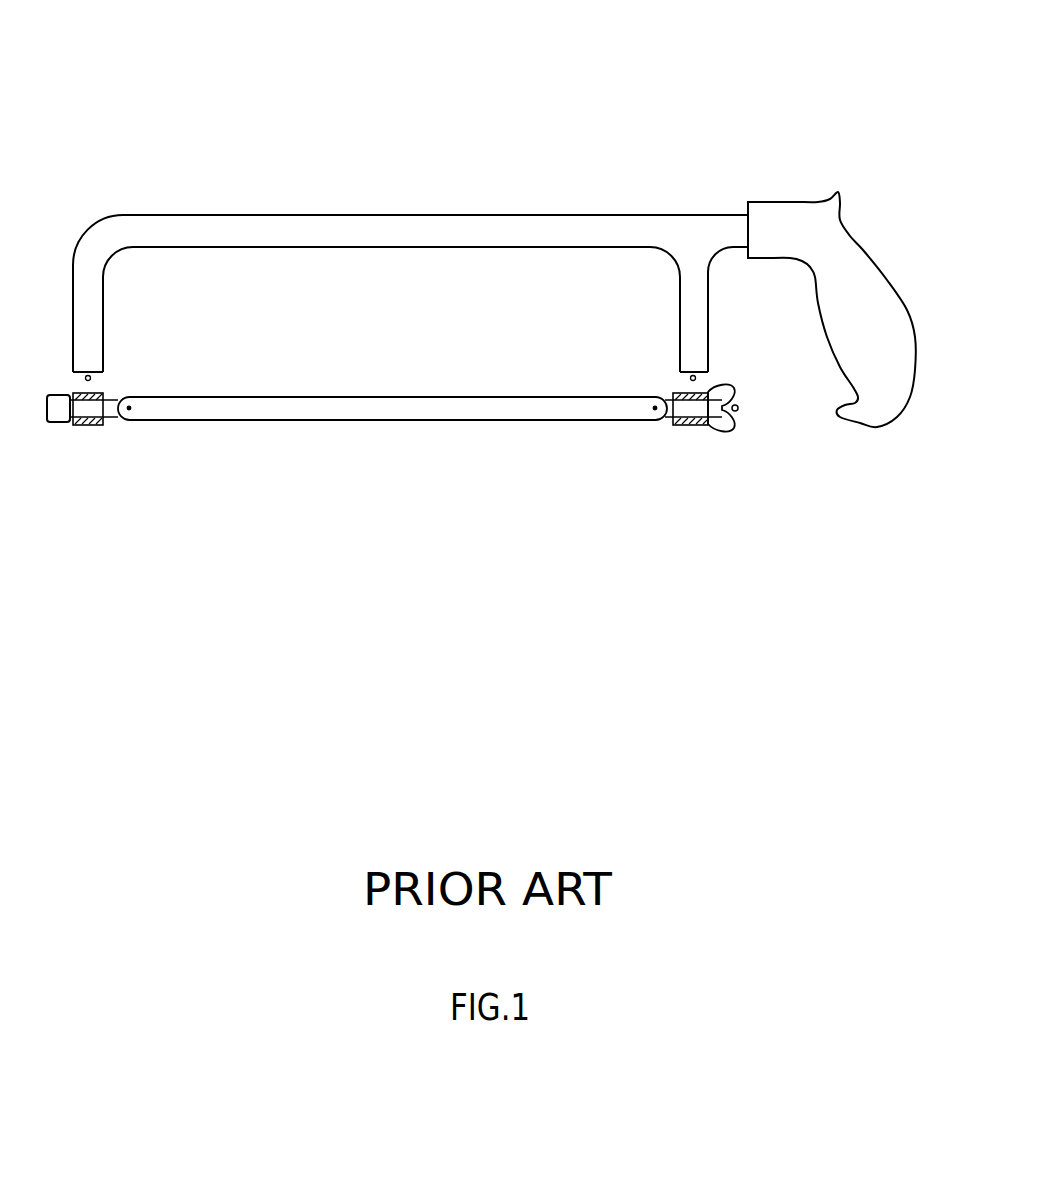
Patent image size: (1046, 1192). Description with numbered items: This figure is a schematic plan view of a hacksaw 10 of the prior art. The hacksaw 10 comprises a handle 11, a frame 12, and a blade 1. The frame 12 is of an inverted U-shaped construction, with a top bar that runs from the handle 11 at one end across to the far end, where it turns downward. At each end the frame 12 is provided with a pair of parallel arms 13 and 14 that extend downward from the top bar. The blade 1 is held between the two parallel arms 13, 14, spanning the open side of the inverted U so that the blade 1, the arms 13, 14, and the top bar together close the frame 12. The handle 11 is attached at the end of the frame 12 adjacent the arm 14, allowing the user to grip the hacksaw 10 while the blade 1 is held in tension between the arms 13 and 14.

The hacksaw 10 is at (583, 110).
The handle 11 is at (887, 287).
The frame 12 is at (294, 216).
The arm 13 is at (105, 315).
The arm 14 is at (680, 308).
The blade 1 is at (383, 410).